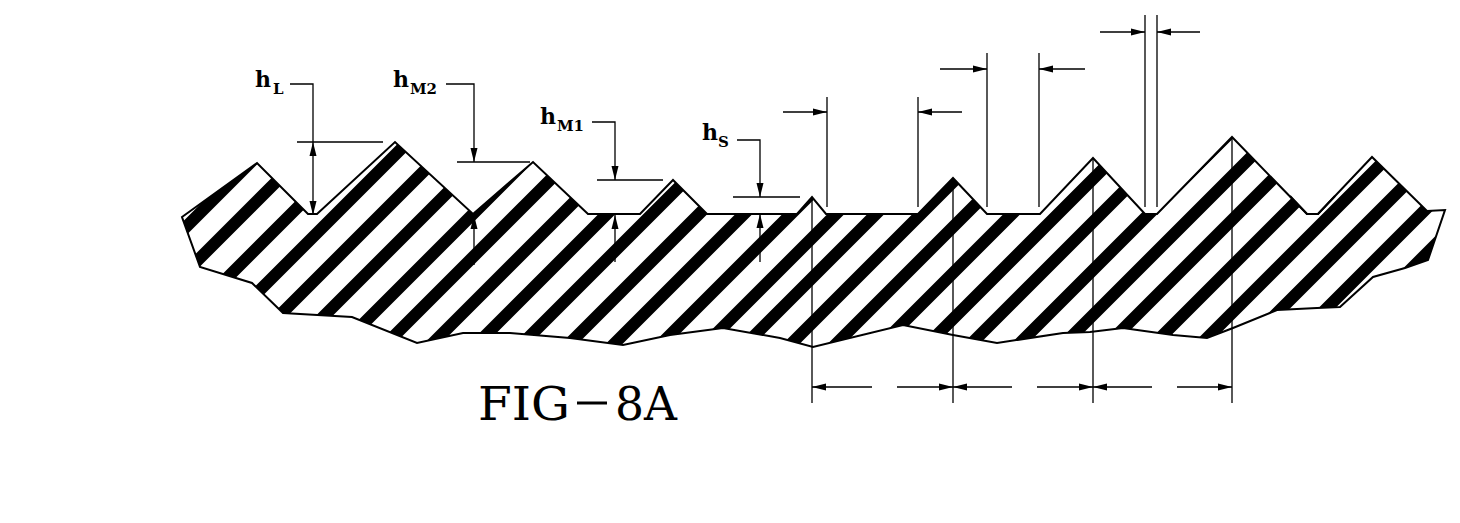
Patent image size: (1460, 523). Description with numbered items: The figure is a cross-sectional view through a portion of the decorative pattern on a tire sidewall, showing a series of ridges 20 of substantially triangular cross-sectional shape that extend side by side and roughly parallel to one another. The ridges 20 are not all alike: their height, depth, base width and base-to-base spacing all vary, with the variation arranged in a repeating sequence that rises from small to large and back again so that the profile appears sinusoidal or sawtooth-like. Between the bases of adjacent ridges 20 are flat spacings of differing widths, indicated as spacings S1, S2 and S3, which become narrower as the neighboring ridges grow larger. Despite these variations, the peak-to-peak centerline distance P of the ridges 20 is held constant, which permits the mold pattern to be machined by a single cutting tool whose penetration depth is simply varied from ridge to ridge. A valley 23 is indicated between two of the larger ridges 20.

The ridge 20 is at (1262, 180).
The valley (gullet) between teeth 23 is at (1308, 212).
The spacing S1 is at (872, 152).
The spacing S2 is at (1012, 130).
The spacing S3 is at (1166, 111).
The peak-to-peak centerline spacing P is at (1022, 270).